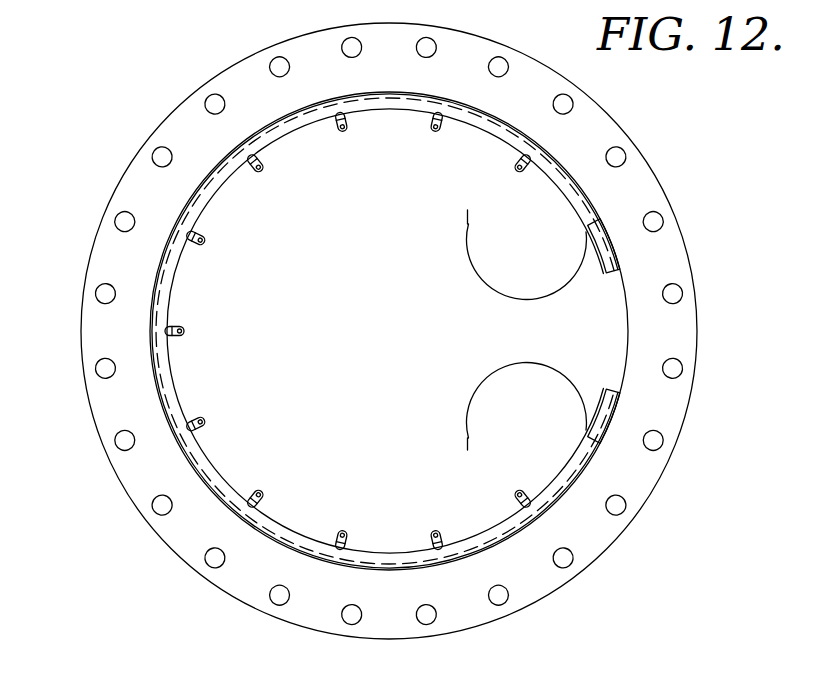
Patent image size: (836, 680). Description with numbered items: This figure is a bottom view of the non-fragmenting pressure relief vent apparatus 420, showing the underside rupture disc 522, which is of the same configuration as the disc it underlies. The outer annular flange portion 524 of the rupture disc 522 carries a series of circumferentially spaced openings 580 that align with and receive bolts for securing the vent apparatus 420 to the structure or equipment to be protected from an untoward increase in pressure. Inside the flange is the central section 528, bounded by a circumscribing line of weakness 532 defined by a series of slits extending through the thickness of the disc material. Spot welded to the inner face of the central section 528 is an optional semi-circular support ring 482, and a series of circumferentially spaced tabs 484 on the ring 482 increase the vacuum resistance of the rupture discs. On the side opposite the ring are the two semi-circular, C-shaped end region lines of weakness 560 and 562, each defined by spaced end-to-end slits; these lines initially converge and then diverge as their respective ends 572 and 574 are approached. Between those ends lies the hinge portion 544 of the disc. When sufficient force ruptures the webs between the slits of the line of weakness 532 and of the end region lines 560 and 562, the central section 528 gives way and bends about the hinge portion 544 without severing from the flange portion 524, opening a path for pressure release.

The vent apparatus 420 is at (636, 95).
The rupture disc 522 is at (171, 106).
The flange portion 524 is at (634, 183).
The hinge portion 544 is at (600, 328).
The openings 580 is at (118, 221).
The support ring 482 is at (217, 186).
The line of weakness 532 is at (285, 532).
The tabs 484 is at (183, 329).
The central section 528 is at (327, 334).
The end region line of weakness 560 is at (481, 264).
The end region line of weakness 562 is at (476, 398).
The end 574 is at (467, 211).
The end 572 is at (467, 450).